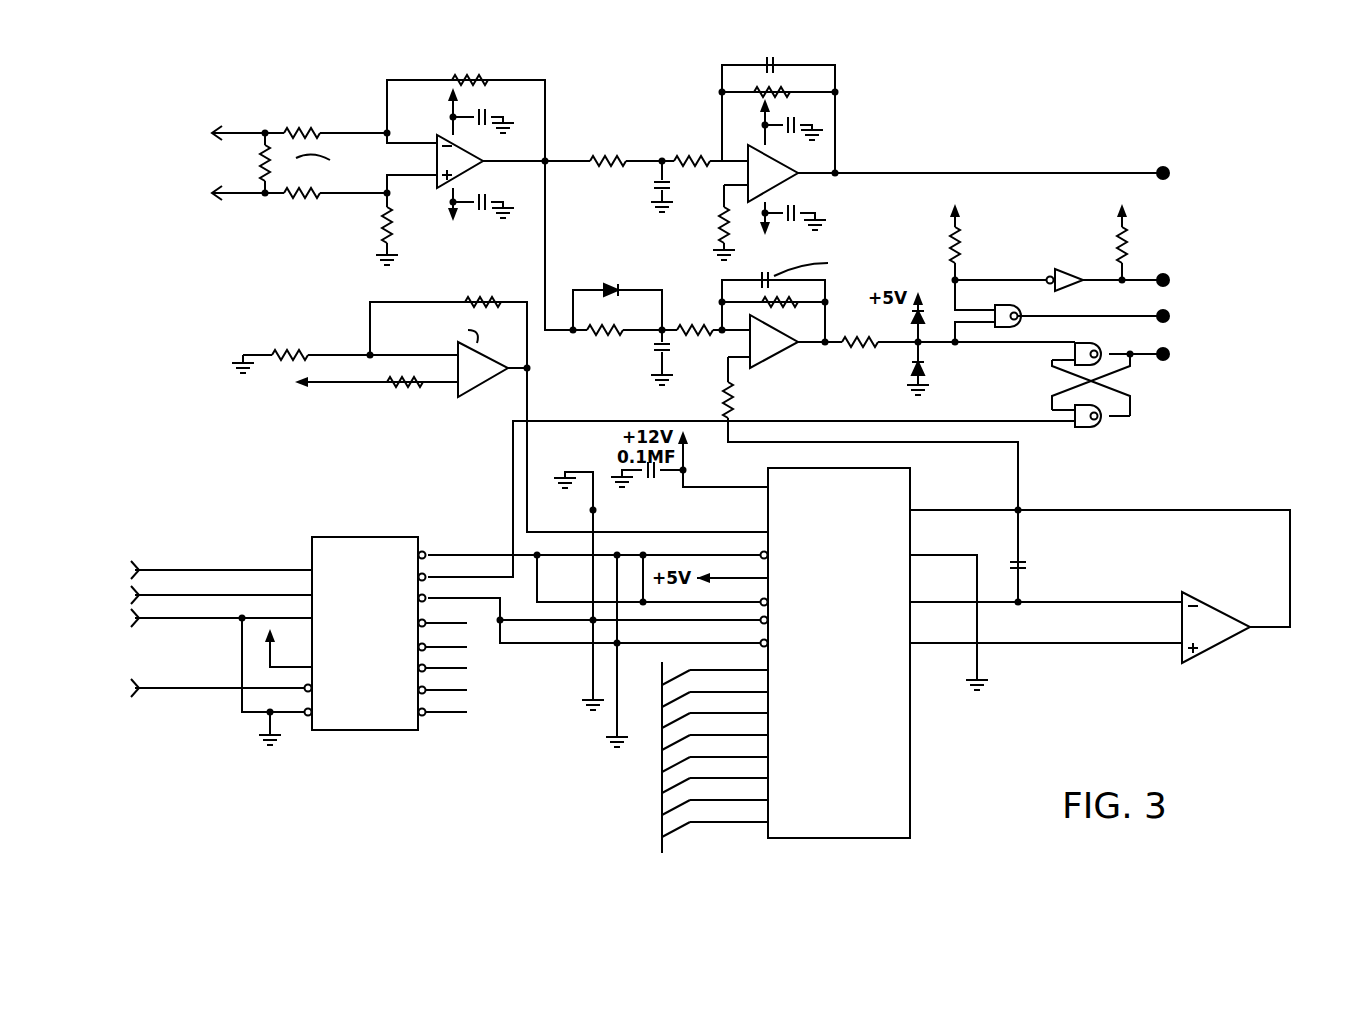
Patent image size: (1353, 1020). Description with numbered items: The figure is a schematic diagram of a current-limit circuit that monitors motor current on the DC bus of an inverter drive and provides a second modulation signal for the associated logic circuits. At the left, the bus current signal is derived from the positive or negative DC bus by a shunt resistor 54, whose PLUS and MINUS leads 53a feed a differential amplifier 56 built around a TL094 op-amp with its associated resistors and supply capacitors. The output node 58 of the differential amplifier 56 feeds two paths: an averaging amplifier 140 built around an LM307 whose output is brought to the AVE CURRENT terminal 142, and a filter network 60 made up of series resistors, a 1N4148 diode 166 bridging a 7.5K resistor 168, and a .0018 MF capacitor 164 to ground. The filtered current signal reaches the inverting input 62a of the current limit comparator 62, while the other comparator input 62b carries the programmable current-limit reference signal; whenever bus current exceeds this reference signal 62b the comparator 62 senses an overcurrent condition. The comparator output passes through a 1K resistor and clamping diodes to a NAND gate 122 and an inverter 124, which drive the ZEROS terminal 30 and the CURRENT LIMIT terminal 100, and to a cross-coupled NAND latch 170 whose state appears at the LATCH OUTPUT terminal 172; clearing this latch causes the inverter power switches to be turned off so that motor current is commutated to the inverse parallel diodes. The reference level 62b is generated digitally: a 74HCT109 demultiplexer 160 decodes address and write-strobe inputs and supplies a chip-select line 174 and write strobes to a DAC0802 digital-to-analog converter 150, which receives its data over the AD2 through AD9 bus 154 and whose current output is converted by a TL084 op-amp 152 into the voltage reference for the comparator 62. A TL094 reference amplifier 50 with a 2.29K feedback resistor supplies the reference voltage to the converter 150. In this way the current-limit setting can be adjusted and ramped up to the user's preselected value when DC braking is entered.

The current sensor leads (PLUS/MINUS inputs) 53a is at (221, 128).
The shunt resistor 54 is at (263, 172).
The differential amplifier 56 is at (442, 140).
The amplifier output node 58 is at (550, 157).
The LM307 averaging amplifier 140 is at (746, 168).
The average current output terminal 142 is at (1163, 166).
The 1N4148 diode 166 is at (602, 289).
The 7.5K resistor 168 is at (597, 325).
The .0018 MF capacitor 164 is at (653, 355).
The low-pass filter network 60 is at (630, 357).
The comparator inverting input 62a is at (722, 322).
The current limit comparator 62 is at (772, 358).
The programmable reference signal 62b is at (835, 442).
The NAND gate 122 is at (1006, 305).
The inverter 124 is at (1058, 268).
The zeros output terminal 30 is at (1165, 272).
The upper inverter power switch 100 is at (1163, 312).
The latch output terminal 172 is at (1165, 362).
The latch 170 is at (1148, 418).
The TL094 reference amplifier 50 is at (475, 420).
The chip select line 174 is at (468, 577).
The 74HCT109 demultiplexer 160 is at (402, 731).
The DAC0802 digital-to-analog converter 150 is at (896, 765).
The address/data bus AD2-AD9 154 is at (742, 832).
The TL084 operational amplifier 152 is at (1214, 646).